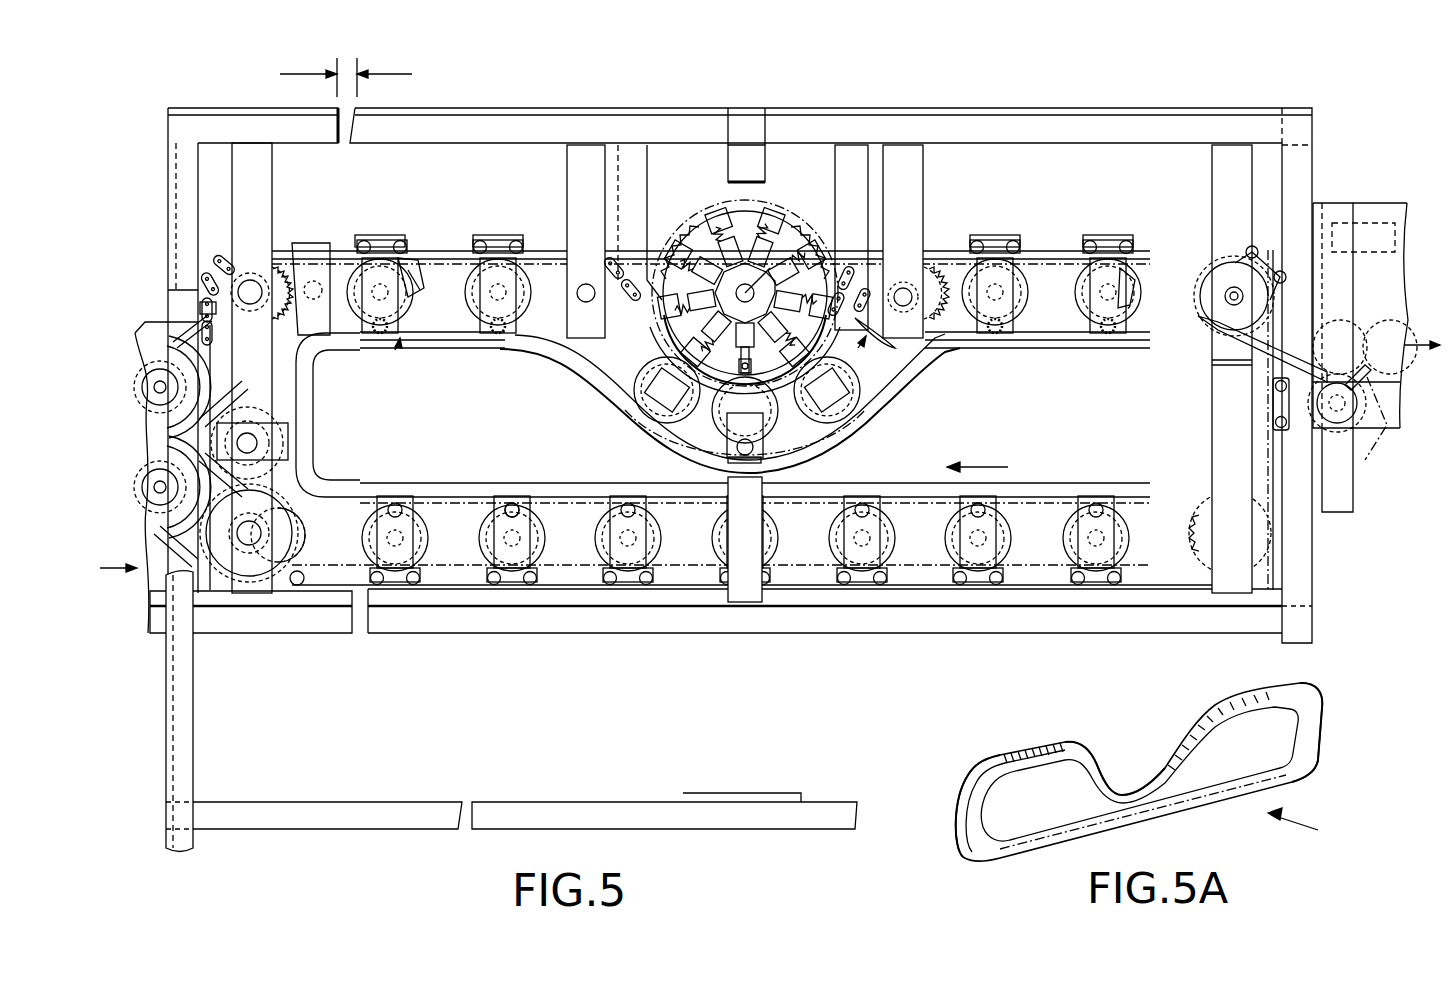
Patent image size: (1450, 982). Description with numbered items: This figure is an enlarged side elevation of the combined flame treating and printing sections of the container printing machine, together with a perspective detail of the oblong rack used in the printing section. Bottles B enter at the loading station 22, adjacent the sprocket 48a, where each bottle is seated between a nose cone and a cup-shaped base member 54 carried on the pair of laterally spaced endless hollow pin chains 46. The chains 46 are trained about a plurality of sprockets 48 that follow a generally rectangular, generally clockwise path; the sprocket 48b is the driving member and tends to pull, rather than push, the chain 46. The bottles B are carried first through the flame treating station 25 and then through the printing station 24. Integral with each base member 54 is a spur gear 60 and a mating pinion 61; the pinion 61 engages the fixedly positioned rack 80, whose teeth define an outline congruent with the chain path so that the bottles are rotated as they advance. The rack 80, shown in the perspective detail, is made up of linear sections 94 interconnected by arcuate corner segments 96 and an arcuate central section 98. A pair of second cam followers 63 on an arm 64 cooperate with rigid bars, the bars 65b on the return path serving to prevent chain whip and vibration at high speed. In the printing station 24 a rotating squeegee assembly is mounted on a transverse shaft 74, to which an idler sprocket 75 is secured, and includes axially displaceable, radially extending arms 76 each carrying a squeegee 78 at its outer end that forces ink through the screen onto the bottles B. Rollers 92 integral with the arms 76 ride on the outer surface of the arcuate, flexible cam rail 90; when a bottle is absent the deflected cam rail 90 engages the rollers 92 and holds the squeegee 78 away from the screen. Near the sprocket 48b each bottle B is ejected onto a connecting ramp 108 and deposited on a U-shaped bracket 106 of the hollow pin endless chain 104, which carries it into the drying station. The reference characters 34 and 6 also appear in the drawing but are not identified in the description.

In FIG. 5, the loading station 22 is at (126, 310).
In FIG. 5, the printing station 24 is at (1052, 52).
In FIG. 5, the flame treating station 25 is at (347, 74).
In FIG. 5, the drive arm 34 is at (178, 345).
In FIG. 5, the hollow pin chains 46 is at (224, 262).
In FIG. 5, the sprockets 48 is at (292, 243).
In FIG. 5, the sprocket 48a is at (290, 530).
In FIG. 5, the driving sprocket 48b is at (1237, 314).
In FIG. 5, the cup-shaped base member 54 is at (362, 268).
In FIG. 5, the spur gear 60 is at (372, 345).
In FIG. 5, the pinion 61 is at (405, 348).
In FIG. 5, the second cam followers 63 is at (398, 246).
In FIG. 5, the arm 64 is at (492, 246).
In FIG. 5, the rigid bars 65b is at (820, 606).
In FIG. 5, the pin 6 is at (518, 508).
In FIG. 5, the transverse shaft 74 is at (752, 288).
In FIG. 5, the idler sprocket 75 is at (832, 262).
In FIG. 5, the radially extending arms 76 is at (840, 418).
In FIG. 5, the squeegee 78 is at (712, 232).
In FIG. 5, the rack 80 is at (398, 360).
In FIG. 5A, the rack 80 is at (1307, 830).
In FIG. 5, the cam rail 90 is at (668, 338).
In FIG. 5, the rollers 92 is at (682, 455).
In FIG. 5A, the linear sections 94 is at (1035, 714).
In FIG. 5A, the arcuate corner segments 96 is at (962, 790).
In FIG. 5A, the arcuate central section 98 is at (1122, 790).
In FIG. 5, the hollow pin endless chain 104 is at (1358, 470).
In FIG. 5, the U-shaped brackets 106 is at (1368, 415).
In FIG. 5, the connecting ramp 108 is at (1295, 330).
In FIG. 5, the bottle B is at (418, 268).